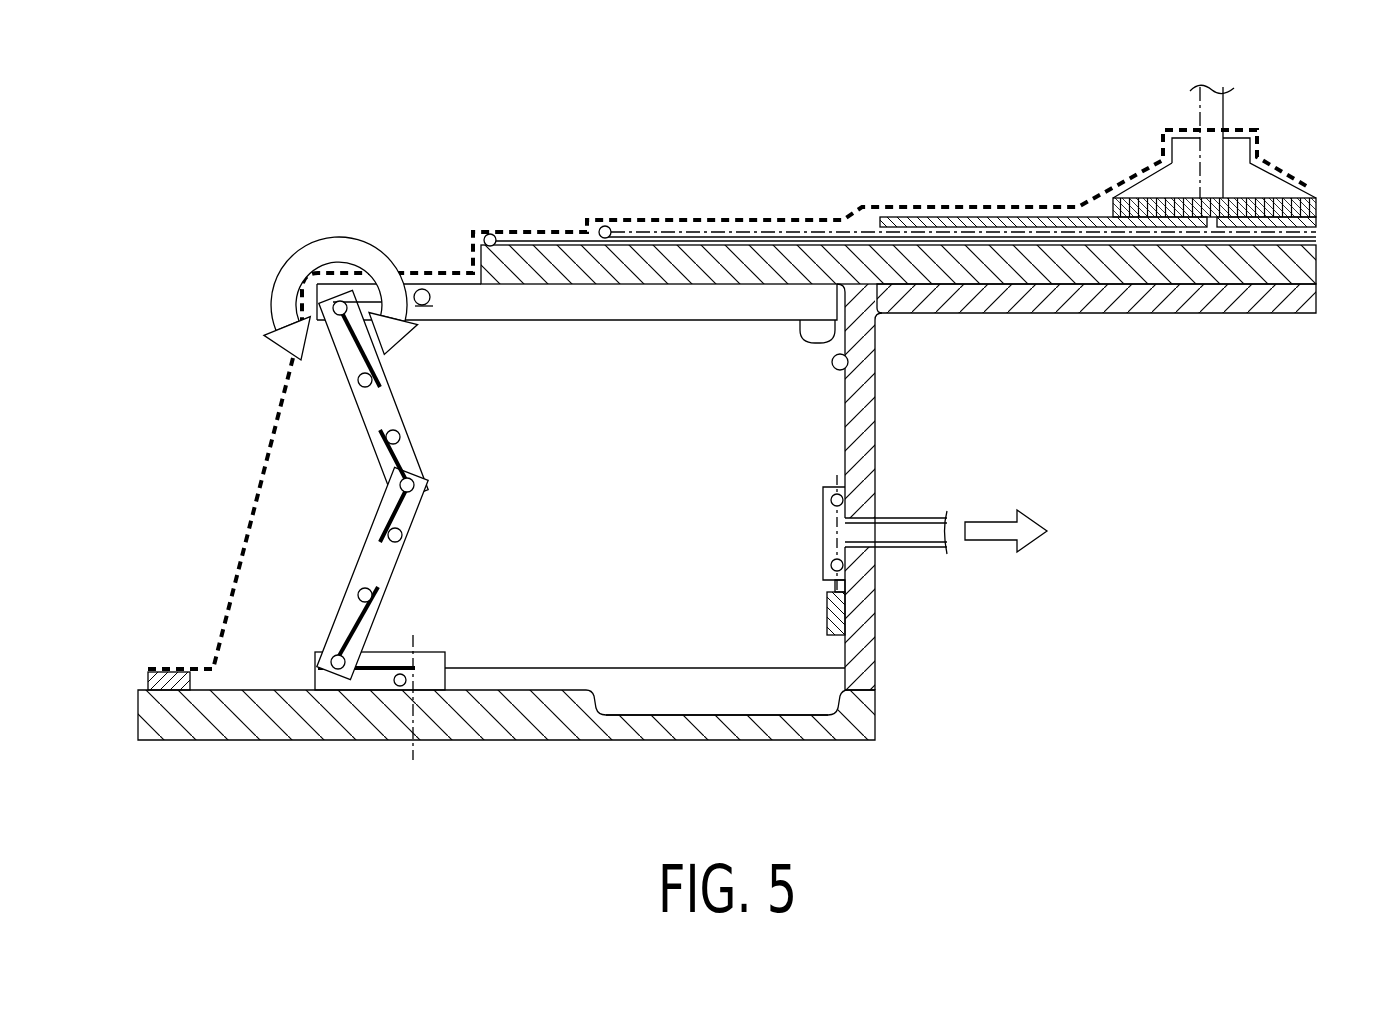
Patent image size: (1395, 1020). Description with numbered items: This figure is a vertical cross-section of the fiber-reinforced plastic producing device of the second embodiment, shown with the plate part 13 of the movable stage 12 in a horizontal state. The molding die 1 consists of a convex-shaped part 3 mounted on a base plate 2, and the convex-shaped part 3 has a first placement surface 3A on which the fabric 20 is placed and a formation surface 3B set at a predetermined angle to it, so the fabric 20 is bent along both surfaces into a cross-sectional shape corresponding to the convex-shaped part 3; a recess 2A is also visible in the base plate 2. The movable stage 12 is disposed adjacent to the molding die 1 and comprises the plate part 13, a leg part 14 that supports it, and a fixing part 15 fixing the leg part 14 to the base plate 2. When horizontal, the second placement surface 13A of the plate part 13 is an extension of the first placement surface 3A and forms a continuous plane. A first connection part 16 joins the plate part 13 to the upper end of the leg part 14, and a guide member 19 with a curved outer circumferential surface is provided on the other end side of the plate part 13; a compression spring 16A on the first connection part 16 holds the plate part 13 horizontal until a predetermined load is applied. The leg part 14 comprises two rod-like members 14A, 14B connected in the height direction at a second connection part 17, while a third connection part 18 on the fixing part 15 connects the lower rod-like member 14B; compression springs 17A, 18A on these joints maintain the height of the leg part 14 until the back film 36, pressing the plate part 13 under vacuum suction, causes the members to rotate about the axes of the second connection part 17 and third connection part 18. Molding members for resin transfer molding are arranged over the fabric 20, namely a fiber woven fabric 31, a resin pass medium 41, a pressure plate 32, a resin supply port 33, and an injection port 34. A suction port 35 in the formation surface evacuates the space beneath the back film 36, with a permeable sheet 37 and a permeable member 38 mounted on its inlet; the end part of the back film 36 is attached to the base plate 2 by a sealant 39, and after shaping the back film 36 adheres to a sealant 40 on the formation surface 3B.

The molding die 1 is at (1212, 428).
The base plate 2 is at (517, 741).
The recess of base 2A is at (655, 716).
The convex-shaped part 3 is at (1091, 300).
The first placement surface 3A is at (1297, 281).
The formation surface 3B is at (849, 367).
The movable stage 12 is at (530, 475).
The plate part 13 is at (710, 306).
The second placement surface 13A is at (663, 271).
The leg part 14 is at (419, 484).
The rod-like member 14A is at (392, 390).
The rod-like member 14B is at (415, 545).
The fixing part 15 is at (431, 652).
The first connection part 16 is at (334, 303).
The compression spring 16A is at (352, 335).
The second connection part 17 is at (400, 488).
The compression spring 17A is at (396, 453).
The third connection part 18 is at (331, 663).
The compression spring 18A is at (357, 617).
The guide member 19 is at (815, 344).
The fabric 20 is at (529, 259).
The fiber woven fabric 31 is at (567, 238).
The pressure plate 32 is at (1030, 217).
The resin supply port 33 is at (1156, 198).
The injection port 34 is at (1265, 186).
The suction port 35 is at (904, 518).
The back film 36 is at (252, 477).
The permeable sheet 37 is at (831, 483).
The permeable member 38 is at (833, 537).
The sealant 39 is at (148, 674).
The sealant 40 is at (836, 617).
The resin pass medium 41 is at (824, 233).